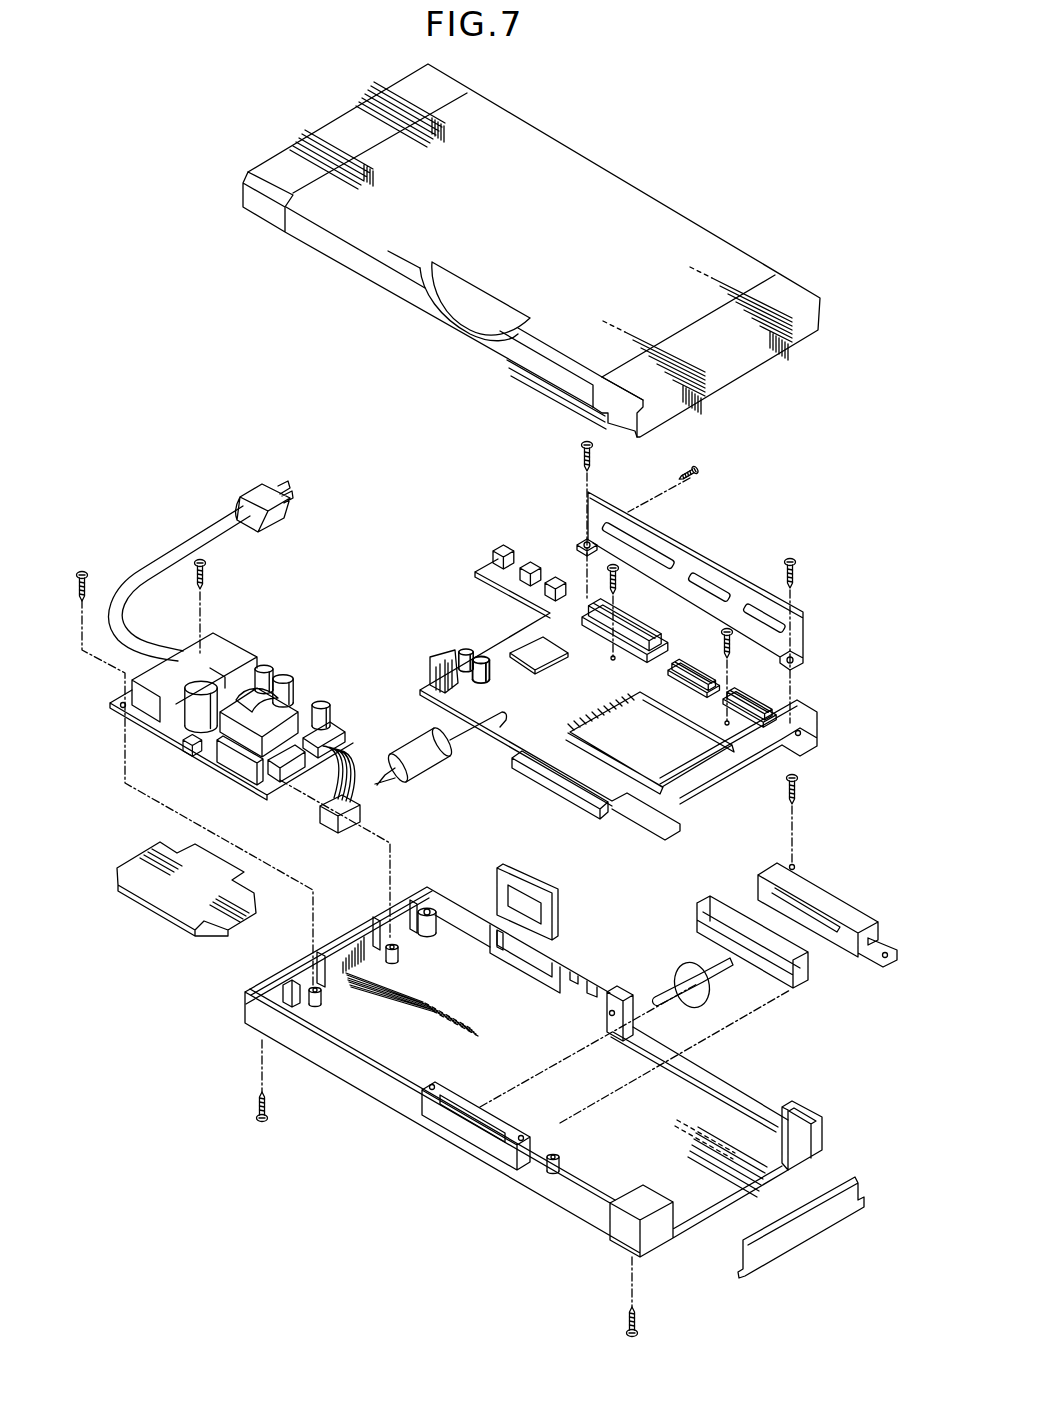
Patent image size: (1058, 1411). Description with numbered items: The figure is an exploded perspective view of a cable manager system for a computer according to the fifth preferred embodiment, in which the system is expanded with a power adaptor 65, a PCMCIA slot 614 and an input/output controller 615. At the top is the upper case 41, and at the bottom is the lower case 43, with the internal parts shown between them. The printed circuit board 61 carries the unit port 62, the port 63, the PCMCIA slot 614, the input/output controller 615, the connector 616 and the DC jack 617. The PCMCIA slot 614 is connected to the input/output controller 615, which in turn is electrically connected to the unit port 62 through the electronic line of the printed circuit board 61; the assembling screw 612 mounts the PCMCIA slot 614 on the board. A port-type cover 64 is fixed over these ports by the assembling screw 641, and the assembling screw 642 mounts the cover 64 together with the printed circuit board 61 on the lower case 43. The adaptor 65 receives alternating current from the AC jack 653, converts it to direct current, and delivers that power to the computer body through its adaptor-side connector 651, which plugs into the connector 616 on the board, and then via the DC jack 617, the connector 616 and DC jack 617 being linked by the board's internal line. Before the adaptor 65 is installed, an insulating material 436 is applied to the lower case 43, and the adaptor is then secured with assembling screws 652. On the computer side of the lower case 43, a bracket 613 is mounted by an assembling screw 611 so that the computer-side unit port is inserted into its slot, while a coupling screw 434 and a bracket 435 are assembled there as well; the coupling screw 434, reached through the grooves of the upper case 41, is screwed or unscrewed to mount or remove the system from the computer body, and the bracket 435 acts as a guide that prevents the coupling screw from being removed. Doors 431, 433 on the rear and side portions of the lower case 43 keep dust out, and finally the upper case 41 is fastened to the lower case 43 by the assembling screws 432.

The upper case 41 is at (600, 183).
The lower case 43 is at (657, 1233).
The door 431 is at (805, 1232).
The assembling screws 432 is at (267, 1118).
The door 433 is at (497, 882).
The coupling screw 434 is at (680, 962).
The bracket 435 is at (807, 978).
The insulating material 436 is at (167, 903).
The printed circuit board 61 is at (695, 778).
The assembling screw 611 is at (798, 792).
The assembling screw 612 is at (720, 638).
The bracket 613 is at (822, 892).
The PCMCIA slot 614 is at (643, 752).
The input/output controller 615 is at (533, 648).
The connector 616 is at (442, 655).
The DC jack 617 is at (432, 760).
The unit port 62 is at (615, 820).
The port 63 is at (778, 702).
The port-type cover 64 is at (692, 552).
The assembling screw 641 is at (700, 474).
The assembling screw 642 is at (578, 448).
The power adaptor 65 is at (208, 753).
The adaptor-side connector 651 is at (367, 813).
The assembling screws 652 is at (92, 570).
The AC jack 653 is at (257, 495).